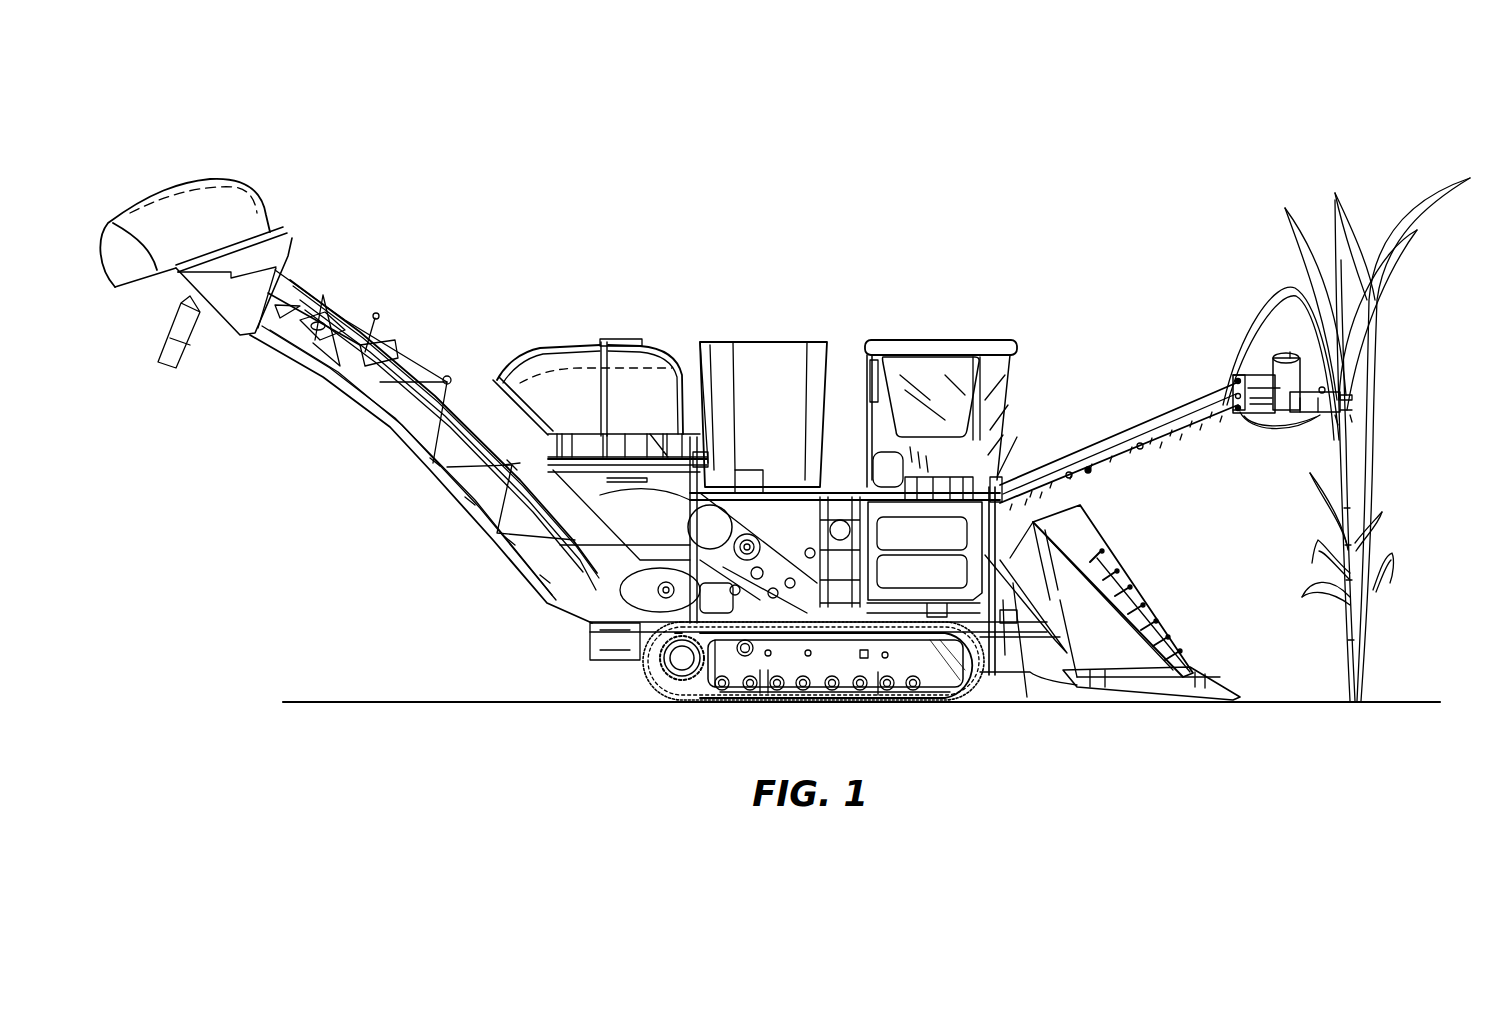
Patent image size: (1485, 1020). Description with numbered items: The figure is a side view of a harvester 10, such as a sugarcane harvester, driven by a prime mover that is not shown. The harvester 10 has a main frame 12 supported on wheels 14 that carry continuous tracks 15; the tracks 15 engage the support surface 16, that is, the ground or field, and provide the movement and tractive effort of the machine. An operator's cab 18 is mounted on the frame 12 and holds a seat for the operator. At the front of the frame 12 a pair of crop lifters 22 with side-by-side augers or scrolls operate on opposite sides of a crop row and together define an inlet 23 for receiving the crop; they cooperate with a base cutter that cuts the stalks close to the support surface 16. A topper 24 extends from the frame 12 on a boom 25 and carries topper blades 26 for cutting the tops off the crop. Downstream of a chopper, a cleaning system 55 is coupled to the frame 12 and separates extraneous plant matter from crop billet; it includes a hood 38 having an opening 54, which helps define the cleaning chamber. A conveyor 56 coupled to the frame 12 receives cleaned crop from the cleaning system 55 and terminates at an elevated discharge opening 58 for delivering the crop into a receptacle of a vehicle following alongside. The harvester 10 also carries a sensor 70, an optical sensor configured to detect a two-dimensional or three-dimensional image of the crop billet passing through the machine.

The harvester 10 is at (1114, 138).
The main frame 12 is at (1005, 655).
The wheels 14 is at (668, 698).
The continuous tracks 15 is at (646, 672).
The support surface 16 is at (386, 700).
The operator's cab 18 is at (961, 338).
The crop lifters 22 is at (1173, 632).
The inlet 23 is at (1142, 557).
The topper 24 is at (1276, 340).
The boom 25 is at (1130, 423).
The topper blades 26 is at (1345, 410).
The hood 38 is at (580, 344).
The opening 54 is at (523, 422).
The cleaning system 55 is at (642, 383).
The conveyor 56 is at (397, 440).
The discharge opening 58 is at (168, 291).
The sensor 70 is at (324, 297).